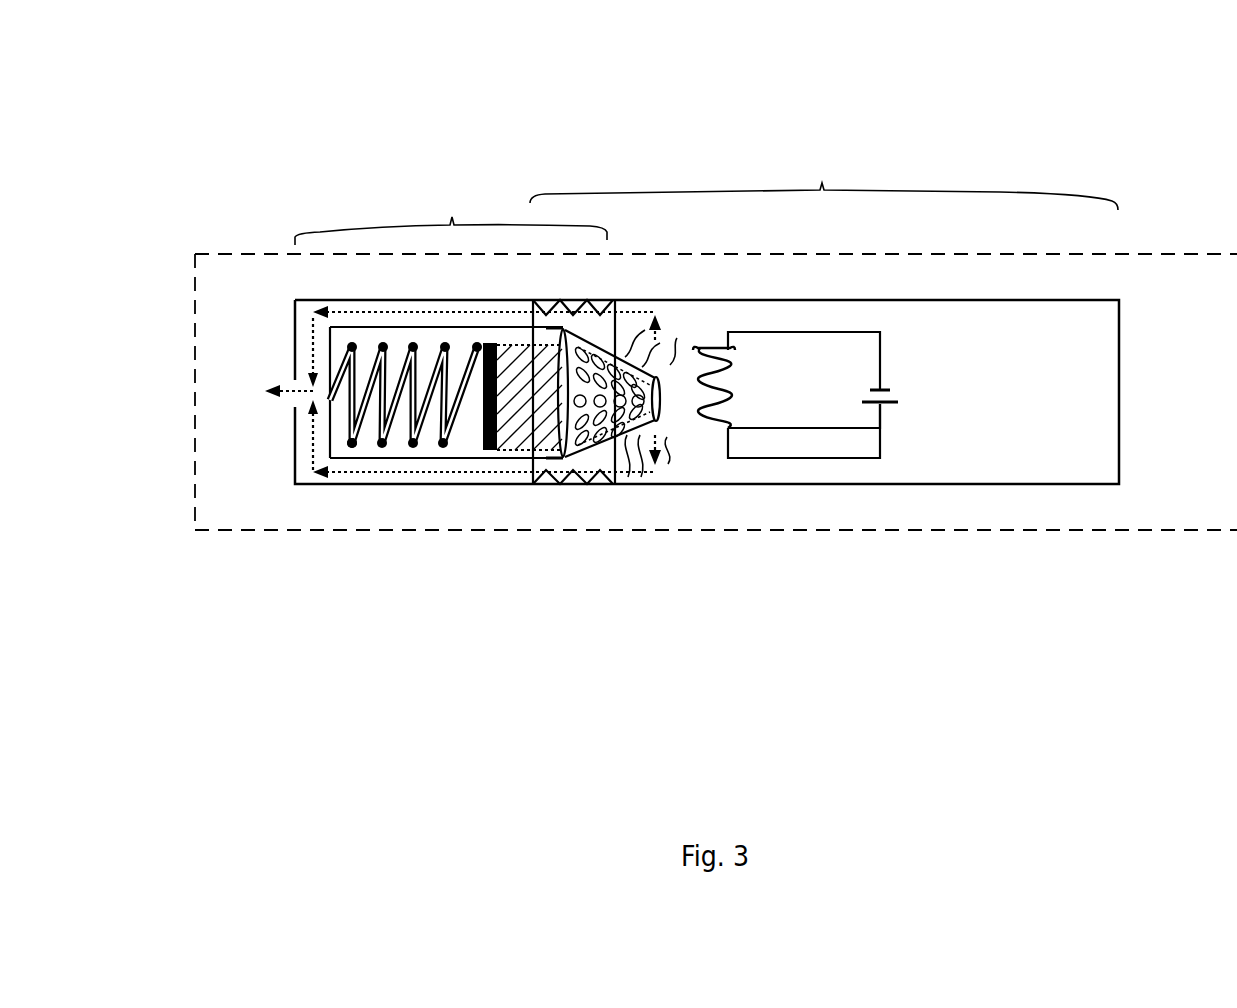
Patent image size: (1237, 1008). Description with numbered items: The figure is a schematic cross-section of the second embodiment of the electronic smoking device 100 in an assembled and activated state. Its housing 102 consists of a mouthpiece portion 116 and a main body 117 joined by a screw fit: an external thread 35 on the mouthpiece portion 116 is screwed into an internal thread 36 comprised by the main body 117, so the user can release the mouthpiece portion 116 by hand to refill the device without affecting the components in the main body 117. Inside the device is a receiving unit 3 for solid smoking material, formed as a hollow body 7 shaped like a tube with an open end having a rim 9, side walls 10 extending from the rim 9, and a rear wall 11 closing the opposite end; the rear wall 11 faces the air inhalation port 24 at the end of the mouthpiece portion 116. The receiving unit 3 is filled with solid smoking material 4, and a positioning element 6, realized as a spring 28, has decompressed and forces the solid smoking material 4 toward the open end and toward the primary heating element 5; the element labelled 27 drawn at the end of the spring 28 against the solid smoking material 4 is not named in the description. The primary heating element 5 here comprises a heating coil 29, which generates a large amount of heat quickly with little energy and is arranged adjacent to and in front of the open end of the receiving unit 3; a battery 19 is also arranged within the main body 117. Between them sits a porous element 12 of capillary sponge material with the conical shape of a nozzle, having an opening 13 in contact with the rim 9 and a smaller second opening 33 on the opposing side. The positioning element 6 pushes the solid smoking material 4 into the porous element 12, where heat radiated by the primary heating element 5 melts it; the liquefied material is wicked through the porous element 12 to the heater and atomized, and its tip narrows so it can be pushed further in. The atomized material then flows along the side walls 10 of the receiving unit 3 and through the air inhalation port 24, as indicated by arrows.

The electronic smoking device 100 is at (1160, 254).
The housing 102 is at (1107, 486).
The mouthpiece portion 116 is at (451, 213).
The main body 117 is at (824, 179).
The positioning element 6 is at (343, 328).
The internal thread 36 is at (612, 302).
The opening 13 is at (556, 330).
The porous element 12 is at (569, 483).
The external thread 35 is at (612, 485).
The rim 9 is at (568, 340).
The hollow body 7 is at (400, 436).
The side walls 10 is at (365, 461).
The receiving unit 3 is at (437, 461).
The piston plate 27 is at (473, 328).
The solid smoking material 4 is at (513, 437).
The air inhalation port 24 is at (273, 375).
The rear wall 11 is at (352, 462).
The spring 28 is at (350, 446).
The second opening 33 is at (675, 347).
The primary heating element 5 is at (715, 345).
The heating coil 29 is at (726, 428).
The battery 19 is at (892, 410).